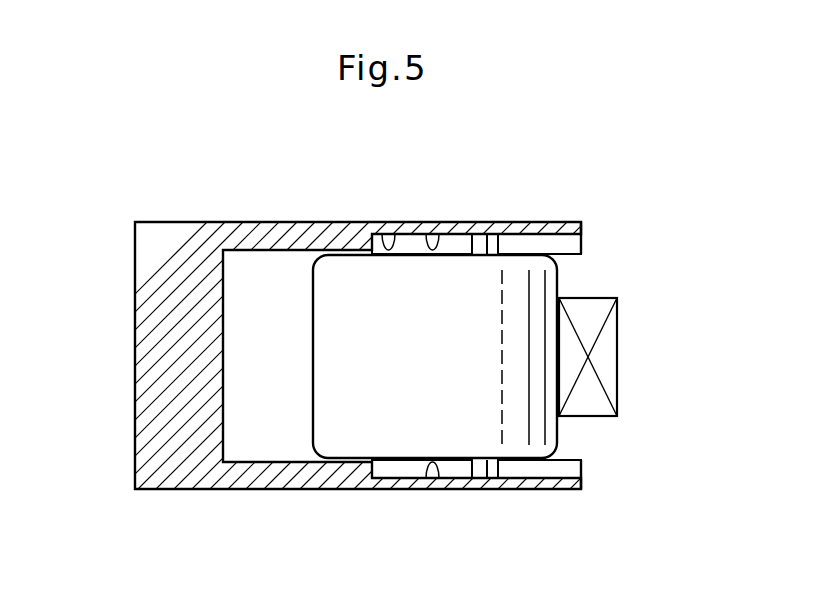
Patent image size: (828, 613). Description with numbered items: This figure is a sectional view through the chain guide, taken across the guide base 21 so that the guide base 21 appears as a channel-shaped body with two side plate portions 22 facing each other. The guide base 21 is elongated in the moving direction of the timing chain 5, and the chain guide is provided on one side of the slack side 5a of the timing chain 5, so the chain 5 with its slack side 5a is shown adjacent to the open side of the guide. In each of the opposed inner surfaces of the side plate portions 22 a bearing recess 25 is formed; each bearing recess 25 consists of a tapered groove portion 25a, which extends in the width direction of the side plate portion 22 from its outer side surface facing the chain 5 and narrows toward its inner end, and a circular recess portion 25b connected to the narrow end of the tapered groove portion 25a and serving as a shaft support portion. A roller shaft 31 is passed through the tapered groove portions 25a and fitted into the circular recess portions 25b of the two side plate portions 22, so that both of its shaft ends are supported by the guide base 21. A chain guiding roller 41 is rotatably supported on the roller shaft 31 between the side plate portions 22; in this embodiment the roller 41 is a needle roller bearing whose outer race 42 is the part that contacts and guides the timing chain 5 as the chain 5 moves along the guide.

The guide base 21 is at (135, 270).
The side plate portion 22 is at (238, 222).
The bearing recess 25 is at (444, 240).
The tapered groove portion 25a is at (510, 243).
The circular recess portion 25b is at (398, 225).
The roller shaft 31 is at (465, 245).
The chain guiding roller 41 is at (531, 250).
The outer race 42 is at (530, 332).
The timing chain 5 is at (617, 312).
The slack side 5a is at (605, 353).